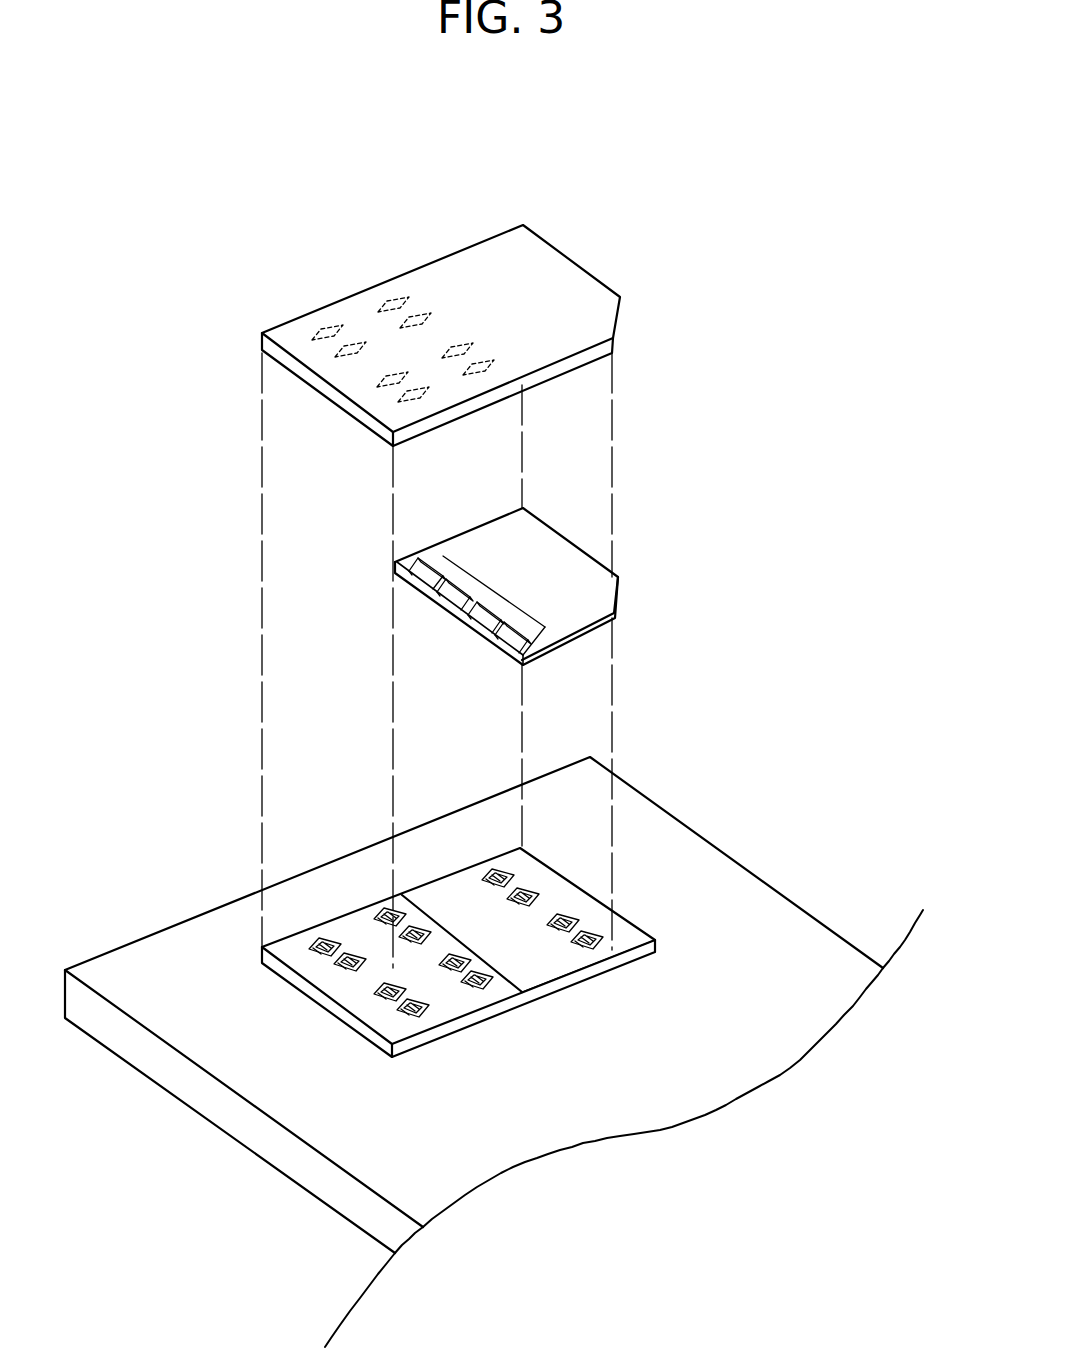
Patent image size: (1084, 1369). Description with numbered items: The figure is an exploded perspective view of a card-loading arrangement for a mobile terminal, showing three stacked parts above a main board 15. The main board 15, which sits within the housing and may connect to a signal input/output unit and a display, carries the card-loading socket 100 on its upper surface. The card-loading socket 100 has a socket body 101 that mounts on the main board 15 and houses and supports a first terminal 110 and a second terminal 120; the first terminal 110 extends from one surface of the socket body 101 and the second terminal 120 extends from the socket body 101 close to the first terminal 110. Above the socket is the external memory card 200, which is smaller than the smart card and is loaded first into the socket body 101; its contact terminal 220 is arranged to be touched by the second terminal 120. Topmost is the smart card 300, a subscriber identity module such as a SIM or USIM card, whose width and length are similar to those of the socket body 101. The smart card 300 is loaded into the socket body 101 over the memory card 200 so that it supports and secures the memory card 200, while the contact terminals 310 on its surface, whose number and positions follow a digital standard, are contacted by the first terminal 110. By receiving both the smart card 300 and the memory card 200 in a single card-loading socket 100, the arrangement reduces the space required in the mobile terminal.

The main board 15 is at (250, 1133).
The card-loading socket 100 is at (318, 1008).
The socket body 101 is at (530, 967).
The first terminal 110 is at (478, 988).
The second terminal 120 is at (492, 878).
The memory card 200 is at (553, 516).
The contact terminal 220 is at (473, 622).
The smart card 300 is at (572, 251).
The contact terminals 310 is at (397, 303).